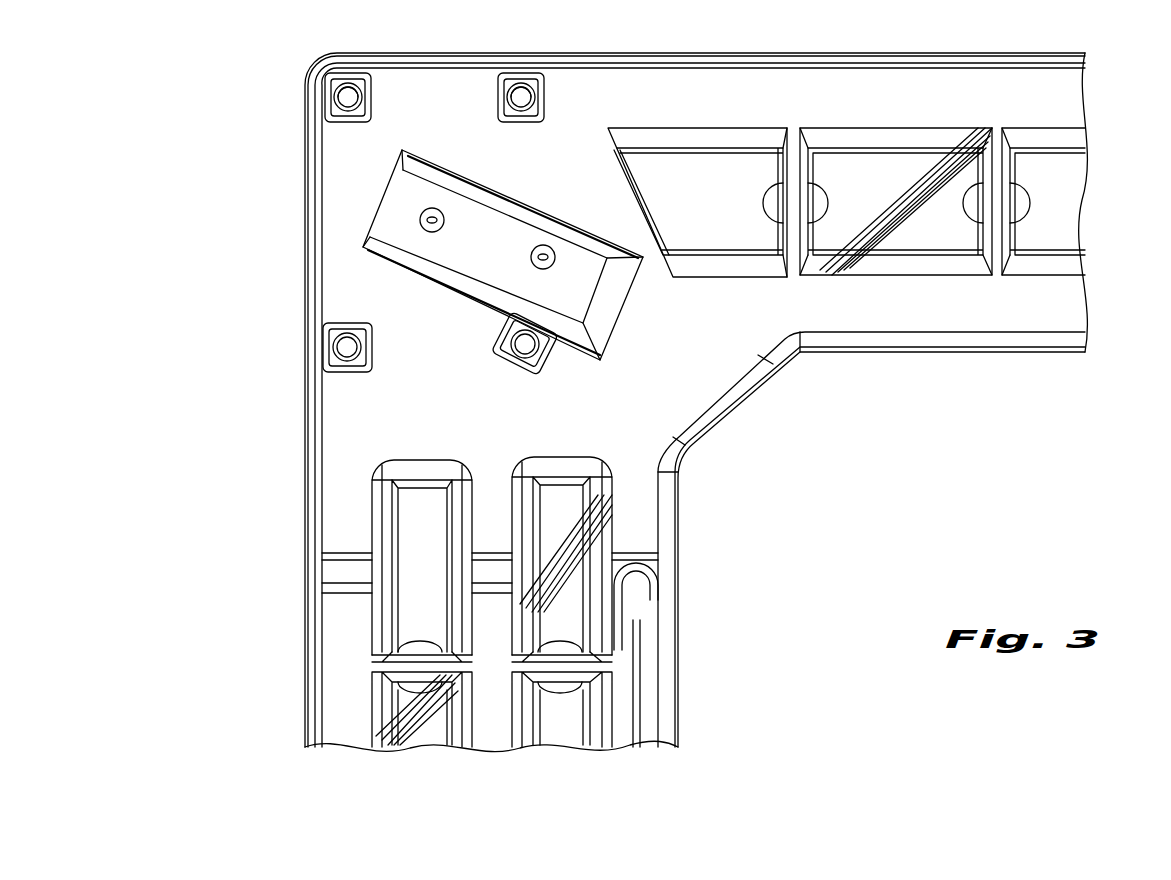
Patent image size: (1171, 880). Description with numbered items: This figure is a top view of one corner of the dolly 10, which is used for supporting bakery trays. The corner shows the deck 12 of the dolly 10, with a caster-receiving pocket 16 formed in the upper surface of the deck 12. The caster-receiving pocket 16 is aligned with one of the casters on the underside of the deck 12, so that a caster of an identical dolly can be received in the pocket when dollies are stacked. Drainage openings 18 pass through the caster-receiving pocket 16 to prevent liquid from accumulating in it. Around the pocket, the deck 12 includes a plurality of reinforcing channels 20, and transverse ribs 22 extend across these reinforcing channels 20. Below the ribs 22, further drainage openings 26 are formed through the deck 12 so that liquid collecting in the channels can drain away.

The dolly 10 is at (244, 168).
The deck 12 is at (697, 372).
The caster-receiving pocket 16 is at (583, 262).
The drainage opening 18 is at (424, 216).
The reinforcing channel 20 is at (918, 136).
The transverse rib 22 is at (782, 186).
The drainage opening 26 is at (812, 200).